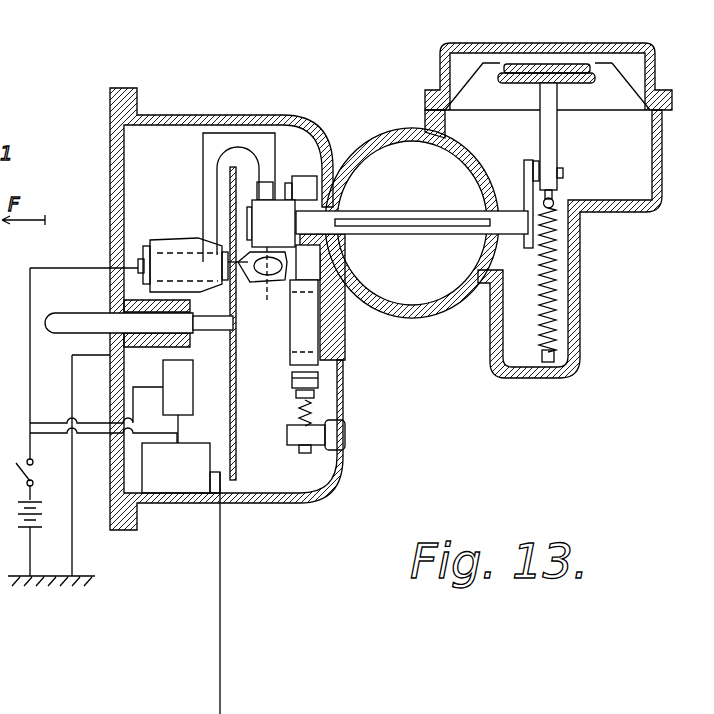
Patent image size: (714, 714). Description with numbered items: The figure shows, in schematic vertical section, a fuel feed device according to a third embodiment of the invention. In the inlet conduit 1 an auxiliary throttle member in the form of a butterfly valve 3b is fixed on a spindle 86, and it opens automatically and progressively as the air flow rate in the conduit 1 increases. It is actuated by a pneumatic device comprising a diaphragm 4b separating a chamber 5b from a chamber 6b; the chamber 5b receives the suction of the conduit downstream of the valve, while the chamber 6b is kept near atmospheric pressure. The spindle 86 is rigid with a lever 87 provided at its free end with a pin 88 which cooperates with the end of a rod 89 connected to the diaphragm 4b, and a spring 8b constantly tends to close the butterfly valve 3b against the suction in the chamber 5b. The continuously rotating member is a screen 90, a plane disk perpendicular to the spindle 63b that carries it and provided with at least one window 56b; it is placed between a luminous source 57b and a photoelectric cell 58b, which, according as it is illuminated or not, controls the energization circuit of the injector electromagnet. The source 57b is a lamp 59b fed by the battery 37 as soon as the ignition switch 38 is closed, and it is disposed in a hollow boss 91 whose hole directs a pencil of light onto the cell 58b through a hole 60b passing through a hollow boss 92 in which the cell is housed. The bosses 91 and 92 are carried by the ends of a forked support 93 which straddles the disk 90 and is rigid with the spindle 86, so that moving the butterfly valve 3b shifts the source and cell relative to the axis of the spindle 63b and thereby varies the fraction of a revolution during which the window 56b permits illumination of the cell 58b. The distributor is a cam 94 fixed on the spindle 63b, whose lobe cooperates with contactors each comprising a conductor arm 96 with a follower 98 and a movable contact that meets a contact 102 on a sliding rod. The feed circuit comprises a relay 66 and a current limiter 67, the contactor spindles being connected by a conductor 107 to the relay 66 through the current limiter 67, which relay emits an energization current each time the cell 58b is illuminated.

The inlet conduit 1 is at (405, 148).
The butterfly valve 3b is at (407, 226).
The diaphragm 4b is at (640, 97).
The chamber 5b is at (455, 68).
The chamber 6b is at (637, 143).
The spring 8b is at (553, 292).
The battery 37 is at (36, 524).
The switch 38 is at (39, 384).
The window 56b is at (230, 257).
The luminous source 57b is at (204, 302).
The photoelectric cell 58b is at (282, 238).
The lamp 59b is at (178, 255).
The hole 60b is at (258, 283).
The spindle 63b is at (84, 313).
The relay 66 is at (180, 391).
The current limiter 67 is at (182, 481).
The spindle 86 is at (382, 217).
The lever 87 is at (527, 176).
The pin 88 is at (563, 173).
The rod 89 is at (549, 127).
The screen 90 is at (236, 436).
The hollow boss 91 is at (160, 265).
The hollow boss 92 is at (268, 280).
The forked support 93 is at (246, 150).
The cam 94 is at (313, 340).
The conductor arm 96 is at (302, 262).
The follower 98 is at (298, 380).
The contact 102 is at (317, 406).
The conductor 107 is at (221, 650).